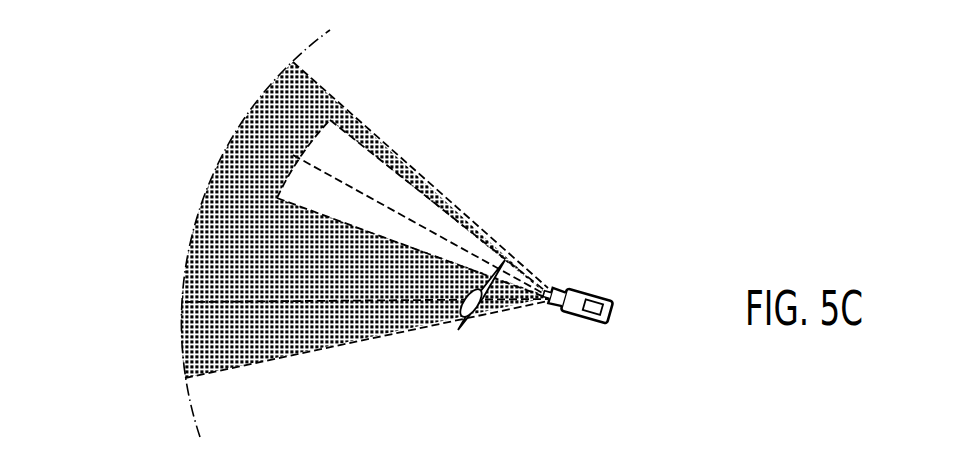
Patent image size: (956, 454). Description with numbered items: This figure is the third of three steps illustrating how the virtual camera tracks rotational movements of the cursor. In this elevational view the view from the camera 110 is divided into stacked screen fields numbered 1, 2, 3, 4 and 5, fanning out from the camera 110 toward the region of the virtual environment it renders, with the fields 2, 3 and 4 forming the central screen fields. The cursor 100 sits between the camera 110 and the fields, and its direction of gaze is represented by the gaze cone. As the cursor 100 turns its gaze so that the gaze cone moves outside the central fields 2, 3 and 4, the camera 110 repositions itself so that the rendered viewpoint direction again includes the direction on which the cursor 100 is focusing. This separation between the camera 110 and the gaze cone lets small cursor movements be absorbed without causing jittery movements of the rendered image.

The screen field 1 is at (420, 167).
The central screen field 2 is at (439, 194).
The central screen field 3 is at (412, 248).
The central screen field 4 is at (366, 318).
The screen field 5 is at (366, 342).
The cursor 100 is at (486, 308).
The camera 110 is at (613, 312).